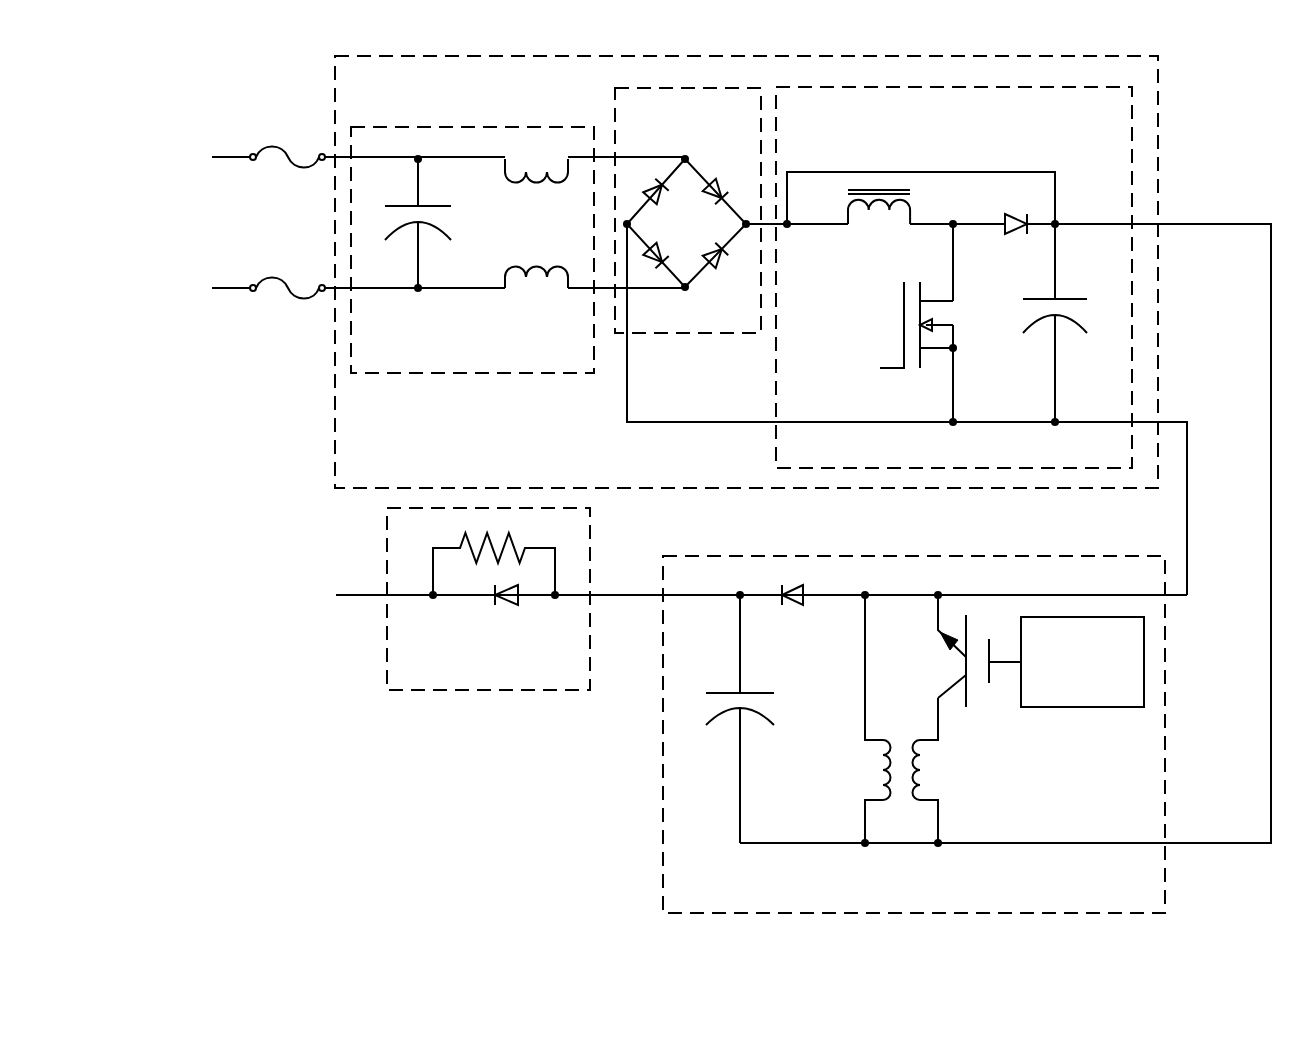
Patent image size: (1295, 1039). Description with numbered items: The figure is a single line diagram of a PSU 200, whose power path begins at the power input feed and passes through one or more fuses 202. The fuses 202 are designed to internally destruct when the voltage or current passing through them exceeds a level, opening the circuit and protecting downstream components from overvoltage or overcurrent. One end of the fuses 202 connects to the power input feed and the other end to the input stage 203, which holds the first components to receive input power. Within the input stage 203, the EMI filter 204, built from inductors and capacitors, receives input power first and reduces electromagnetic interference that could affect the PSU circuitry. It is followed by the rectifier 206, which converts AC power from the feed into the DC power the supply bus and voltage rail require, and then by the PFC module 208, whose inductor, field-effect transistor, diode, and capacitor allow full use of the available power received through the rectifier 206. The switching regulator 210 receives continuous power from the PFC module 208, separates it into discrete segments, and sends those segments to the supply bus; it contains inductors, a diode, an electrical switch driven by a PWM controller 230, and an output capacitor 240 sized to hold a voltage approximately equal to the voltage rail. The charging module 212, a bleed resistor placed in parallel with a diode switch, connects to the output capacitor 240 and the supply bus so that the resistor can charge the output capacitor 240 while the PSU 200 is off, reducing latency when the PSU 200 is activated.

The PSU 200 is at (382, 828).
The fuses 202 is at (288, 133).
The input stage 203 is at (374, 112).
The EMI filter 204 is at (456, 364).
The rectifier 206 is at (671, 142).
The PFC module 208 is at (937, 143).
The switching regulator 210 is at (899, 906).
The charging module 212 is at (472, 681).
The PWM controller 230 is at (1066, 697).
The output capacitor 240 is at (706, 712).